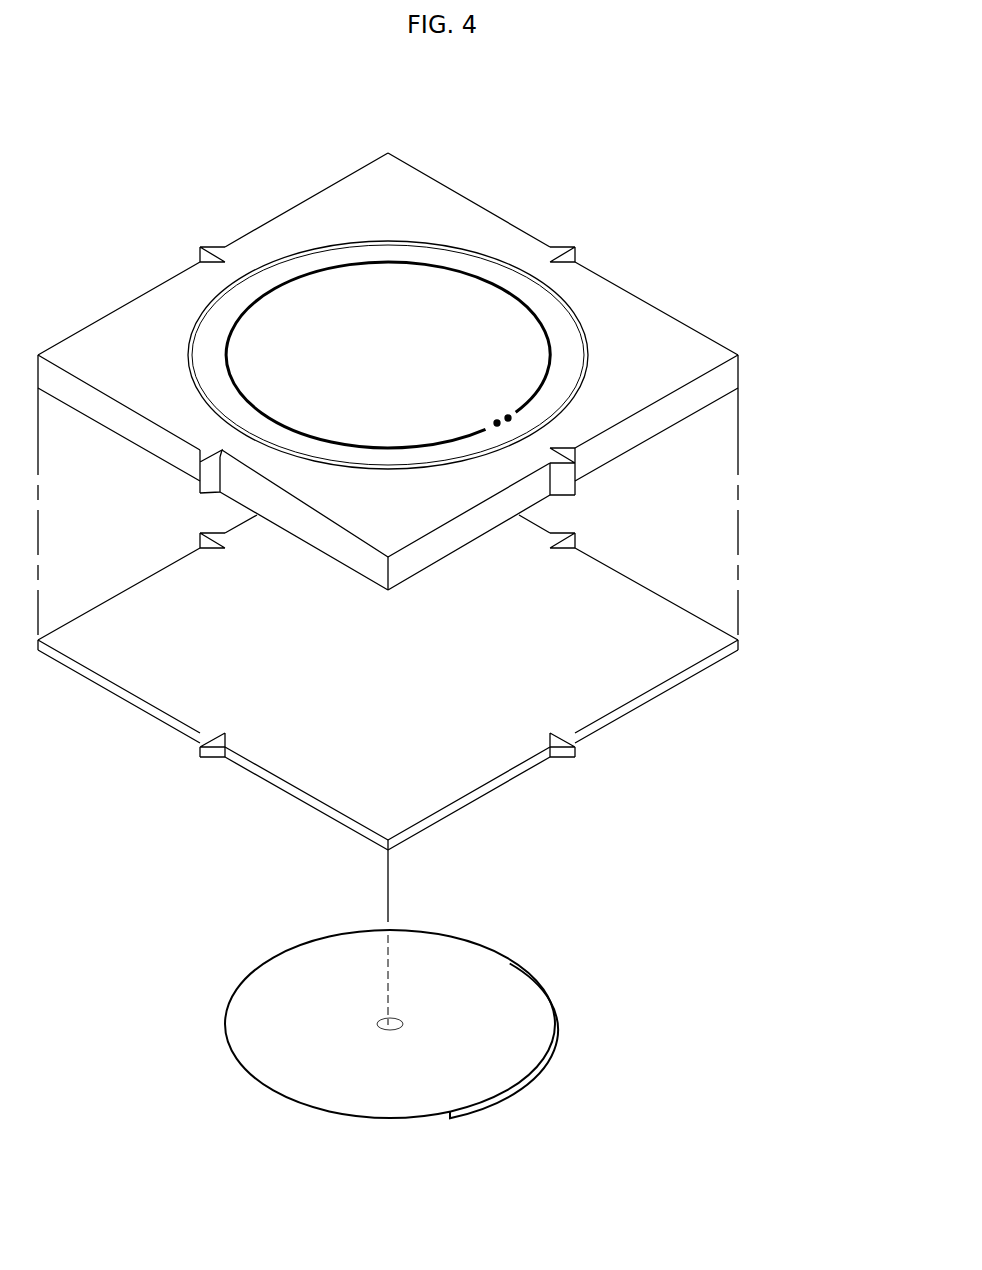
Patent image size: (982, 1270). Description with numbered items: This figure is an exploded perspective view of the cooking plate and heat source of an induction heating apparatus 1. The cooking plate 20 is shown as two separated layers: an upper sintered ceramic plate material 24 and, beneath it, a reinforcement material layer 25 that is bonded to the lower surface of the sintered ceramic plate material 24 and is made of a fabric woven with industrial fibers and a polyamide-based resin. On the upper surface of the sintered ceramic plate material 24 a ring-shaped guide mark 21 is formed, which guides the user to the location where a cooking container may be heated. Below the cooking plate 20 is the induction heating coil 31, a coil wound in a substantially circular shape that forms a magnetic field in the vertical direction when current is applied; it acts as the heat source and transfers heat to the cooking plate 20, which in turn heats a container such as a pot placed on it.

The induction heating apparatus 1 is at (93, 131).
The cooking plate 20 is at (841, 372).
The guide mark 21 is at (477, 275).
The sintered ceramic plate material 24 is at (760, 366).
The reinforcement material layer 25 is at (760, 643).
The induction heating coil 31 is at (585, 1023).